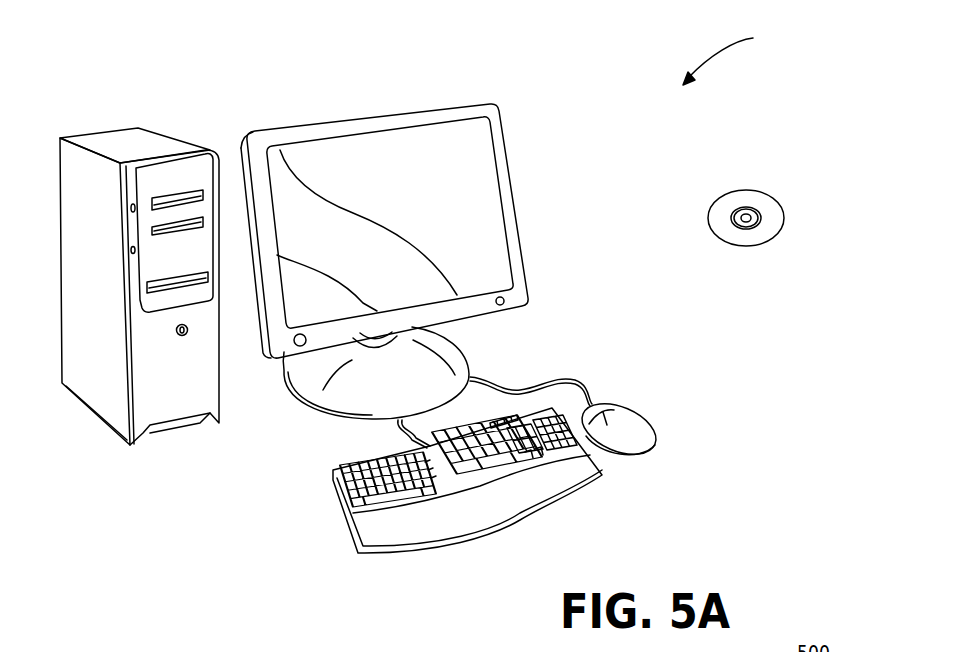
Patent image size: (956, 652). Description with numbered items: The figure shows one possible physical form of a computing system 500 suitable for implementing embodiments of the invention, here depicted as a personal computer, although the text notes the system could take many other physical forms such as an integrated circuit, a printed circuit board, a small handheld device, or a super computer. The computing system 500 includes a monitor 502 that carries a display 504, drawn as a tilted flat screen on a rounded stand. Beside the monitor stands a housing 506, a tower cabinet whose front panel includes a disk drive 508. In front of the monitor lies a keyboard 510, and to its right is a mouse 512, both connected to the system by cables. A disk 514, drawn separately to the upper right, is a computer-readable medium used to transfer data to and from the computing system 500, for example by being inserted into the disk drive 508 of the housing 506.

The computing system 500 is at (739, 54).
The monitor 502 is at (520, 228).
The display 504 is at (465, 153).
The housing 506 is at (127, 143).
The disk drive 508 is at (200, 282).
The keyboard 510 is at (345, 517).
The mouse 512 is at (642, 420).
The disk 514 is at (767, 193).